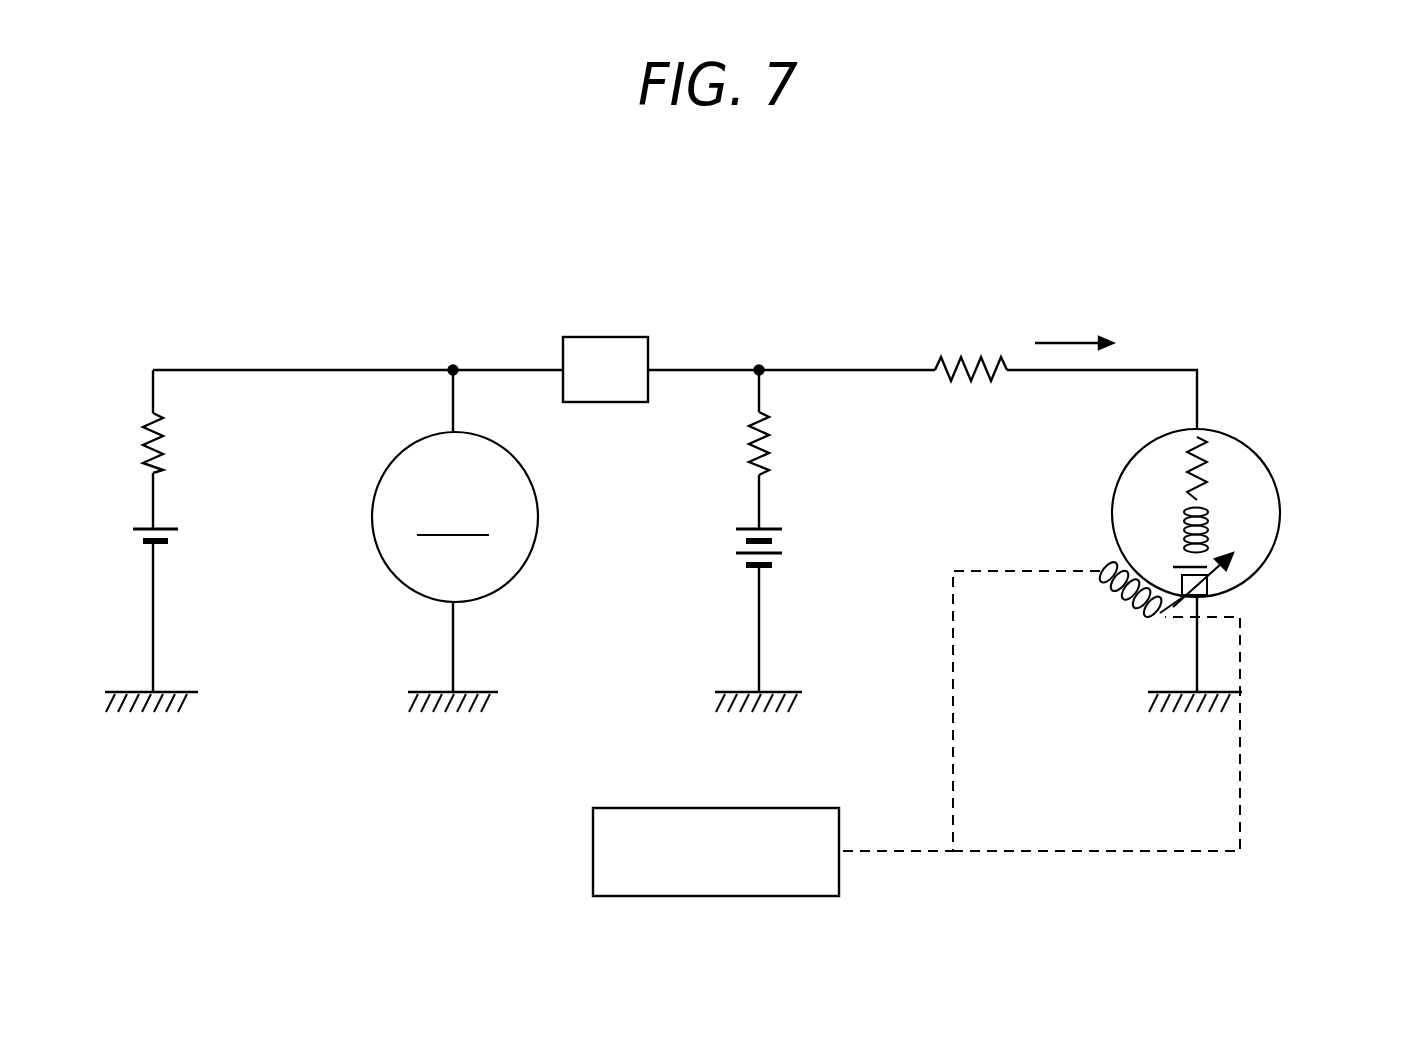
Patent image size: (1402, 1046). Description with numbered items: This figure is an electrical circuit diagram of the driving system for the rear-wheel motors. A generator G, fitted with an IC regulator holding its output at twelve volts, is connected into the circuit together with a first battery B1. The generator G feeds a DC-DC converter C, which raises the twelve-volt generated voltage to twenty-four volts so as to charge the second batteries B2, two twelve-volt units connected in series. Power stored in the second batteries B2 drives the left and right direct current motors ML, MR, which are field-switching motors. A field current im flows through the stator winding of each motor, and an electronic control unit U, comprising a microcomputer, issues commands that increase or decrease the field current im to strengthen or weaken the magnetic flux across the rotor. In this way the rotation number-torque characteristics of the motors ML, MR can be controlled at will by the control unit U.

The first battery B1 is at (186, 536).
The second battery B2 is at (789, 535).
The generator G is at (535, 553).
The DC-DC converter C is at (617, 388).
The left motor ML is at (1234, 483).
The right motor MR is at (1244, 441).
The field current im is at (1127, 632).
The electronic control unit U is at (726, 875).